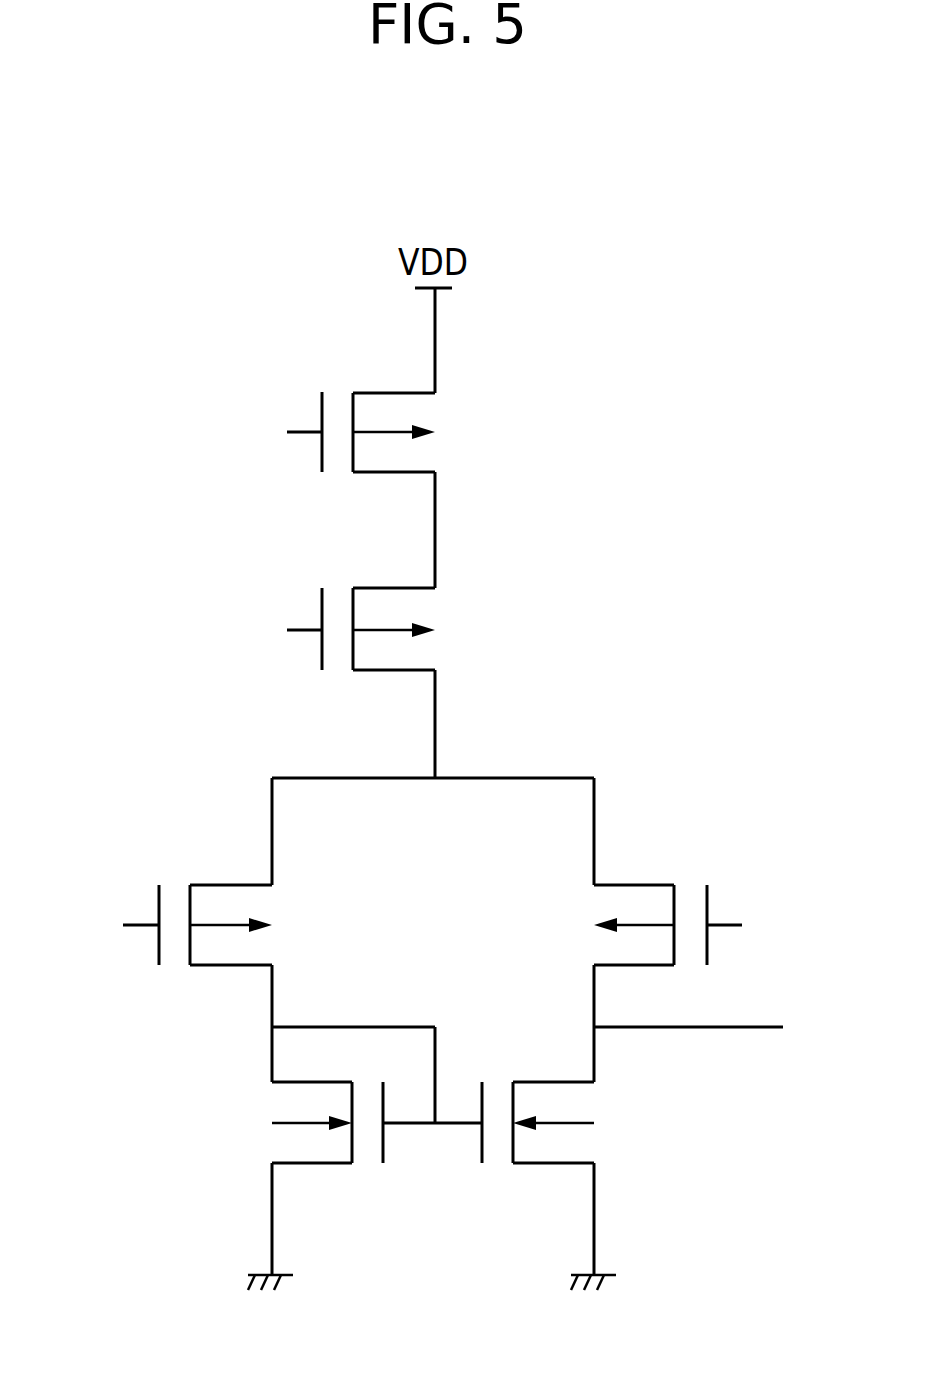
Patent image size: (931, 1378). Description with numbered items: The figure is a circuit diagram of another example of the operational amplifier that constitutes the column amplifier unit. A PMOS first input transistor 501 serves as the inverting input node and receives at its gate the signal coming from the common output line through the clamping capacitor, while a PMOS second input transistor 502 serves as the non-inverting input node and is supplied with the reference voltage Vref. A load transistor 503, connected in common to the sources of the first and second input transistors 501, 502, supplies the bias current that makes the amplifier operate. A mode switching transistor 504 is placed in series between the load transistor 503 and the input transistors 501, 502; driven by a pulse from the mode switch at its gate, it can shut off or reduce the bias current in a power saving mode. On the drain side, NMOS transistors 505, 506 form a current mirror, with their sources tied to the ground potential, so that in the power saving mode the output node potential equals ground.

The first input transistor 501 is at (648, 867).
The second input transistor 502 is at (223, 867).
The load transistor 503 is at (455, 430).
The mode switching transistor 504 is at (455, 628).
The NMOS transistor 505 is at (263, 1143).
The NMOS transistor 506 is at (608, 1142).